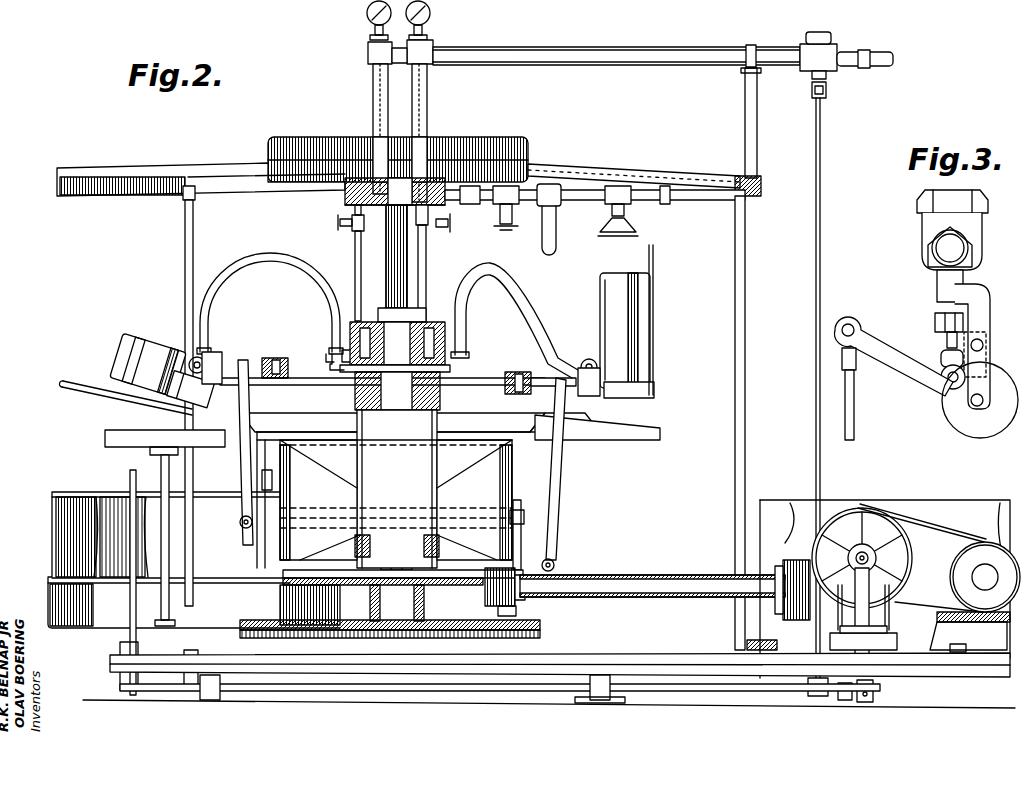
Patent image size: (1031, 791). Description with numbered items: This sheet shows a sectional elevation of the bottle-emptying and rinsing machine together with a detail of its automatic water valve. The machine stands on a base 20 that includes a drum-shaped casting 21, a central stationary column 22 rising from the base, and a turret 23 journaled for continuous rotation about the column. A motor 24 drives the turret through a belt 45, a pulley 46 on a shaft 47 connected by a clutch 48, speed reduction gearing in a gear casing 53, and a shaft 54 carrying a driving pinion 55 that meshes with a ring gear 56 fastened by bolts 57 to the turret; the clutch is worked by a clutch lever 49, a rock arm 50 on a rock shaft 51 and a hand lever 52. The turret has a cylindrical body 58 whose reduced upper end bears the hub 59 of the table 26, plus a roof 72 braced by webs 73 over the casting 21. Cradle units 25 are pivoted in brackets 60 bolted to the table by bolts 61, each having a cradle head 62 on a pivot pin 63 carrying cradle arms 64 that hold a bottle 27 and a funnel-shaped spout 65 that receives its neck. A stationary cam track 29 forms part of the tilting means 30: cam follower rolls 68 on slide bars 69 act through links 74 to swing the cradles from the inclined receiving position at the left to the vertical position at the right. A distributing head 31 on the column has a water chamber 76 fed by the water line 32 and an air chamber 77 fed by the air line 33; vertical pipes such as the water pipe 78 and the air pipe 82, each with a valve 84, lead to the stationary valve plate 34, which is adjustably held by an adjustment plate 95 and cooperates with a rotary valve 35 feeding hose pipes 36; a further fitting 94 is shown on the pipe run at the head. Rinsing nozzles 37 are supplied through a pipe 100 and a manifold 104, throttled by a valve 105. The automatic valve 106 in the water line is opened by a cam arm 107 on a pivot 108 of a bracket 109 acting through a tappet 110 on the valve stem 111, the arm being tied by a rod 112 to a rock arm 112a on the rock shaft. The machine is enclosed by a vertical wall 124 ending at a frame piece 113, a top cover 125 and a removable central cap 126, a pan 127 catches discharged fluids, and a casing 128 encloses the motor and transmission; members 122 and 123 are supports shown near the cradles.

In FIG. 2, the base 20 is at (502, 672).
In FIG. 2, the drum-shaped casting 21 is at (290, 550).
In FIG. 2, the central stationary column 22 is at (396, 266).
In FIG. 2, the turret 23 is at (447, 496).
In FIG. 2, the motor 24 is at (990, 550).
In FIG. 2, the cradle unit 25 is at (592, 339).
In FIG. 2, the table 26 is at (530, 384).
In FIG. 2, the bottle 27 is at (140, 352).
In FIG. 2, the cam track 29 is at (510, 506).
In FIG. 2, the operating connection means 30 is at (236, 516).
In FIG. 2, the distributing head 31 is at (345, 188).
In FIG. 2, the water pipe line 32 is at (428, 102).
In FIG. 3, the water pipe line 32 is at (932, 248).
In FIG. 2, the air pipe line 33 is at (373, 88).
In FIG. 2, the stationary valve plate 34 is at (436, 322).
In FIG. 2, the rotary valve 35 is at (445, 360).
In FIG. 2, the hose pipe 36 is at (283, 258).
In FIG. 2, the rinsing nozzle 37 is at (630, 226).
In FIG. 2, the belt 45 is at (945, 534).
In FIG. 2, the pulley 46 is at (908, 541).
In FIG. 2, the shaft 47 is at (868, 512).
In FIG. 2, the clutch 48 is at (880, 557).
In FIG. 2, the clutch lever 49 is at (892, 628).
In FIG. 2, the rock arm 50 is at (875, 667).
In FIG. 2, the rock shaft 51 is at (758, 693).
In FIG. 2, the hand lever 52 is at (130, 476).
In FIG. 2, the gear casing 53 is at (882, 576).
In FIG. 2, the shaft 54 is at (690, 583).
In FIG. 2, the driving pinion 55 is at (488, 600).
In FIG. 2, the ring gear 56 is at (292, 568).
In FIG. 2, the bolt 57 is at (442, 556).
In FIG. 2, the cylindrical body 58 is at (356, 452).
In FIG. 2, the hub 59 is at (360, 388).
In FIG. 2, the bracket 60 is at (252, 360).
In FIG. 2, the bolt 61 is at (512, 370).
In FIG. 2, the cradle head 62 is at (232, 380).
In FIG. 2, the pivot pin 63 is at (190, 358).
In FIG. 2, the cradle arm 64 is at (88, 378).
In FIG. 2, the funnel-shaped spout 65 is at (205, 400).
In FIG. 2, the cam follower roll 68 is at (262, 477).
In FIG. 2, the slide bar 69 is at (250, 528).
In FIG. 2, the roof 72 is at (340, 425).
In FIG. 2, the web 73 is at (462, 450).
In FIG. 2, the link 74 is at (243, 455).
In FIG. 2, the water chamber 76 is at (425, 196).
In FIG. 2, the air chamber 77 is at (345, 200).
In FIG. 2, the pipe 78 is at (428, 258).
In FIG. 2, the pipe 82 is at (355, 247).
In FIG. 2, the valve 84 is at (452, 225).
In FIG. 2, the valve 94 is at (338, 222).
In FIG. 2, the adjustment plate 95 is at (369, 318).
In FIG. 2, the pipe 100 is at (672, 208).
In FIG. 2, the manifold 104 is at (556, 225).
In FIG. 2, the valve 105 is at (504, 230).
In FIG. 2, the automatic valve 106 is at (826, 65).
In FIG. 3, the automatic valve 106 is at (925, 222).
In FIG. 3, the cam arm 107 is at (928, 394).
In FIG. 3, the pivot 108 is at (962, 424).
In FIG. 3, the bracket 109 is at (985, 295).
In FIG. 3, the tappet 110 is at (948, 358).
In FIG. 3, the valve stem 111 is at (940, 334).
In FIG. 2, the rod 112 is at (815, 375).
In FIG. 3, the rod 112 is at (858, 426).
In FIG. 2, the rock arm 112a is at (816, 696).
In FIG. 2, the vertical frame piece 113 is at (185, 246).
In FIG. 2, the table 122 is at (130, 432).
In FIG. 2, the table 123 is at (625, 428).
In FIG. 2, the vertical wall 124 is at (735, 352).
In FIG. 2, the top cover 125 is at (613, 160).
In FIG. 2, the central cap 126 is at (505, 130).
In FIG. 2, the pan 127 is at (50, 597).
In FIG. 2, the casing 128 is at (986, 502).